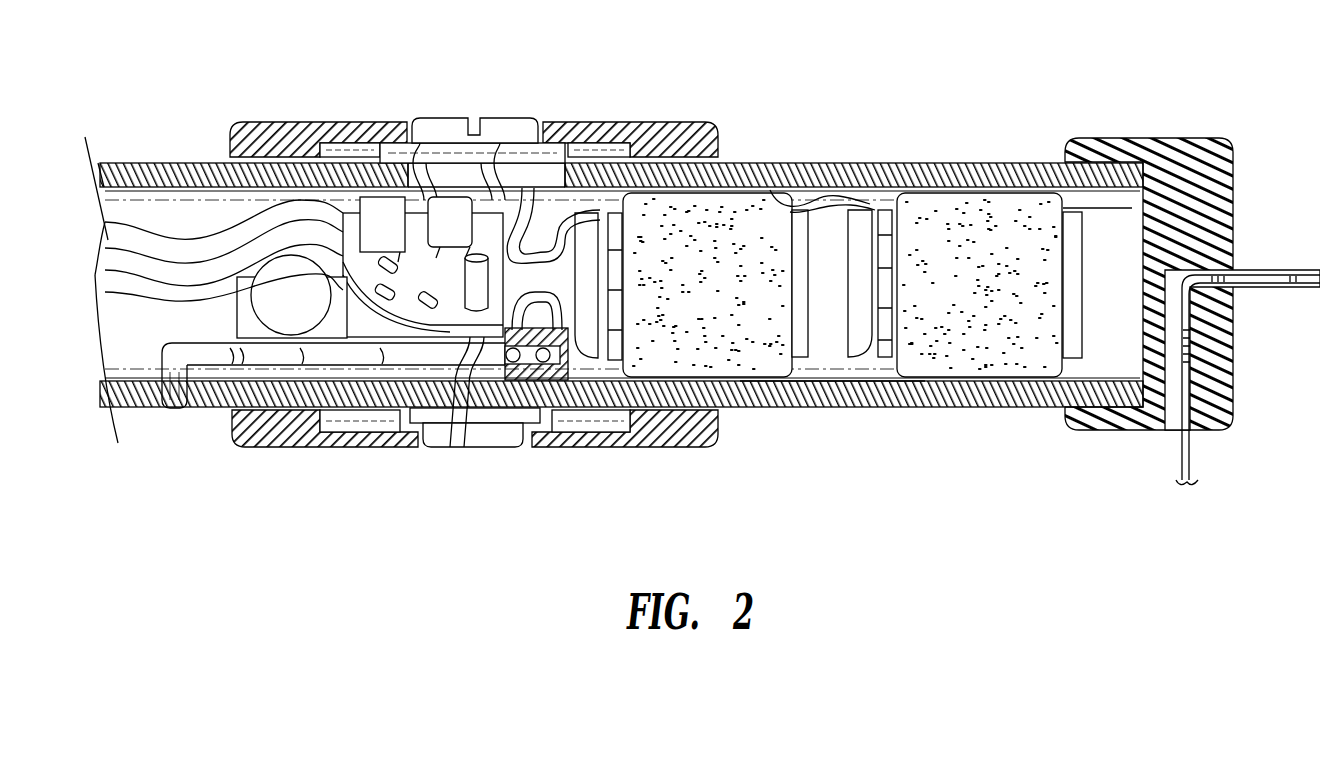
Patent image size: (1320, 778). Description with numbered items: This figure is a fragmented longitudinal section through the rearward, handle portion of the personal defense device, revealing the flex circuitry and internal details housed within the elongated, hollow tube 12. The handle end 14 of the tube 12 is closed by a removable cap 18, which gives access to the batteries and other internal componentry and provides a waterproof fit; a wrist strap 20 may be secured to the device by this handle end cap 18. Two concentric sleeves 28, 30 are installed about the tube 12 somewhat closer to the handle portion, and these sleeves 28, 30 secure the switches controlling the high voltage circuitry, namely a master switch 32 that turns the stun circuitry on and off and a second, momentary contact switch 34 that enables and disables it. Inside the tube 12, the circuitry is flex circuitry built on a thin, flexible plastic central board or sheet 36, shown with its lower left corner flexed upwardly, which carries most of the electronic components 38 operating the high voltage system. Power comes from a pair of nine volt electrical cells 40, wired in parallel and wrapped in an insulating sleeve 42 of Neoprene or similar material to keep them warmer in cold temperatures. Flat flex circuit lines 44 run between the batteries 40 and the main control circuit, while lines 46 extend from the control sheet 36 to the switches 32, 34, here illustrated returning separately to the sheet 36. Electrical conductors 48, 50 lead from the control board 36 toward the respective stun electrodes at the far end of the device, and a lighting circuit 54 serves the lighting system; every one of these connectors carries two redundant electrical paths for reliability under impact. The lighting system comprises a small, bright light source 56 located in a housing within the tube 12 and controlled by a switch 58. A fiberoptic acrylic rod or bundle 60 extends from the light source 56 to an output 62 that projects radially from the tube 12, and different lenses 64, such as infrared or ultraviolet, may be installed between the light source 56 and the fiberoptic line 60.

The hollow tube 12 is at (163, 163).
The handle end 14 is at (915, 163).
The removable cap 18 is at (1147, 138).
The wrist strap 20 is at (1193, 460).
The concentric sleeve 28 is at (300, 122).
The concentric sleeve 30 is at (660, 122).
The master switch 32 is at (444, 118).
The momentary contact switch 34 is at (447, 447).
The flexible plastic central board 36 is at (414, 118).
The electronic components 38 is at (456, 270).
The electrical cells 40 is at (798, 338).
The insulating sleeve 42 is at (907, 400).
The lines 44 is at (527, 165).
The lines 46 is at (495, 163).
The electrical conductor 48 is at (130, 227).
The electrical conductor 50 is at (117, 287).
The lighting circuit 54 is at (543, 286).
The light source 56 is at (557, 410).
The switch 58 is at (308, 307).
The fiberoptic rod 60 is at (222, 345).
The output 62 is at (170, 408).
The lenses 64 is at (523, 405).